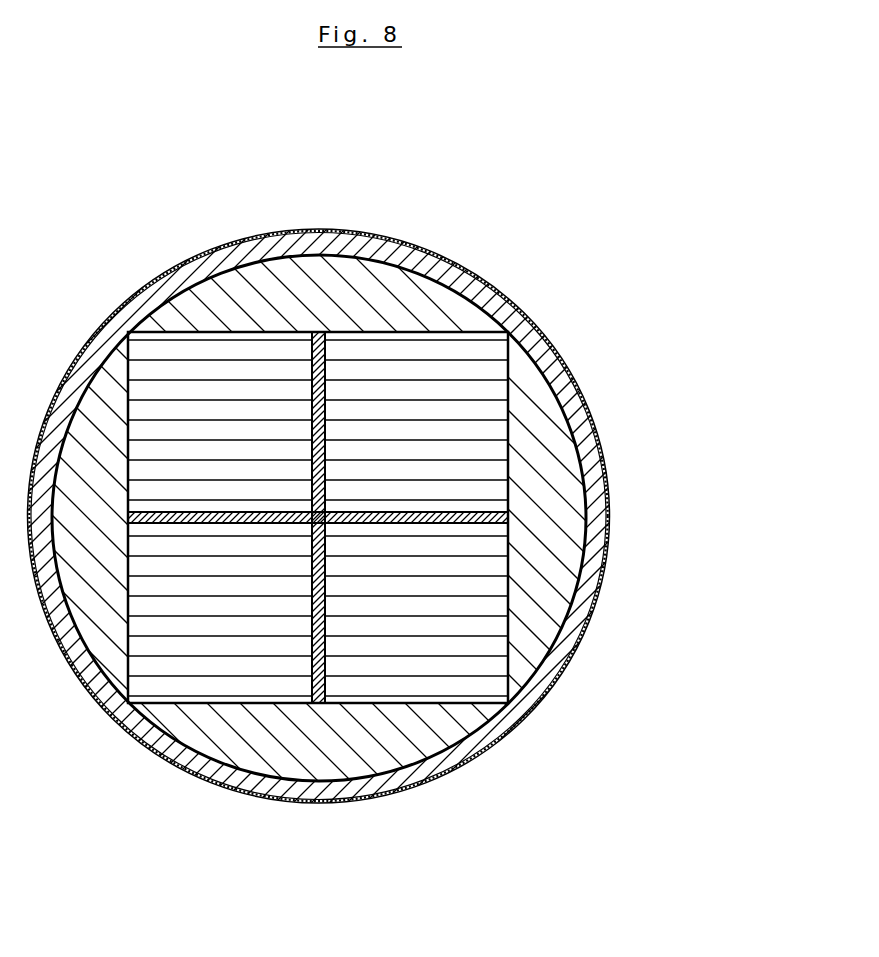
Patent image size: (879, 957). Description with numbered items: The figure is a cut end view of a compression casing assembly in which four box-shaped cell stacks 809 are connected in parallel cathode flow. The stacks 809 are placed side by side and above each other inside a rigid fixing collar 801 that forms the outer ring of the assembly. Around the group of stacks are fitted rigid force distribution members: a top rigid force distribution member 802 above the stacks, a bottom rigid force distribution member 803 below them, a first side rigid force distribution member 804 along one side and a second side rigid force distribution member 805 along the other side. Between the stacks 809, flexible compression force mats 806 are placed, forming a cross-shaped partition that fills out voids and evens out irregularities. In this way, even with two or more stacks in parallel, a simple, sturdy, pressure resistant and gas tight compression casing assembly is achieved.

The rigid fixing collar 801 is at (508, 300).
The top rigid force distribution member 802 is at (328, 291).
The bottom rigid force distribution member 803 is at (330, 737).
The first side rigid force distribution member 804 is at (105, 520).
The second side rigid force distribution member 805 is at (548, 508).
The flexible compression force mat 806 is at (597, 490).
The cell stack 809 is at (225, 412).